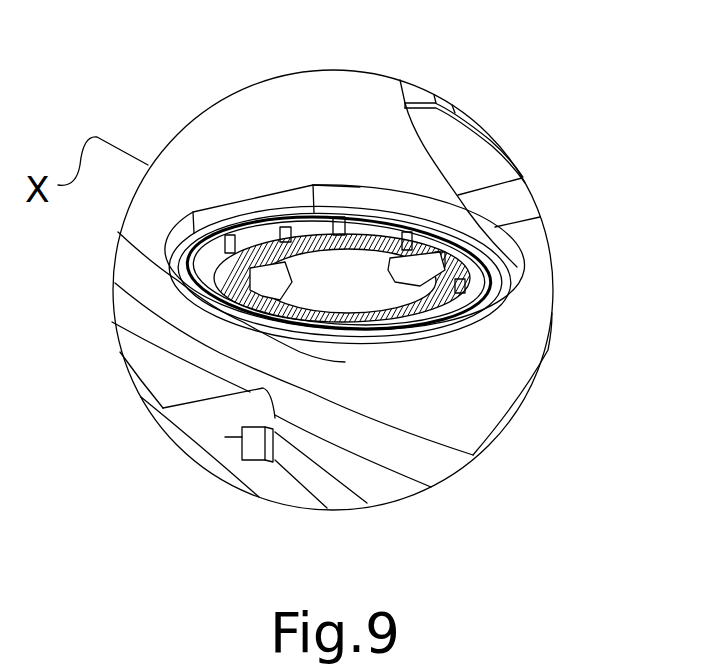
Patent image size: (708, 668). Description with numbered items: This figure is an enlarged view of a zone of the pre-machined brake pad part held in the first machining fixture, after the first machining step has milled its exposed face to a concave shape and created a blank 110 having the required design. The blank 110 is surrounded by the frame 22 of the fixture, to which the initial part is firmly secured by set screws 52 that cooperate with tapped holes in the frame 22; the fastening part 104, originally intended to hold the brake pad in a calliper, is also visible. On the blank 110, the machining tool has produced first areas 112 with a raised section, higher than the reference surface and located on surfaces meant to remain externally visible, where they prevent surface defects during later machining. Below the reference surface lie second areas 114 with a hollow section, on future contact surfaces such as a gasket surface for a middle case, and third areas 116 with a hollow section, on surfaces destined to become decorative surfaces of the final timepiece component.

The blank 110 is at (246, 170).
The first areas 112 is at (383, 207).
The second areas 114 is at (495, 290).
The third areas 116 is at (440, 315).
The set screws 52 is at (497, 198).
The frame 22 is at (187, 443).
The fastening part 104 is at (373, 473).